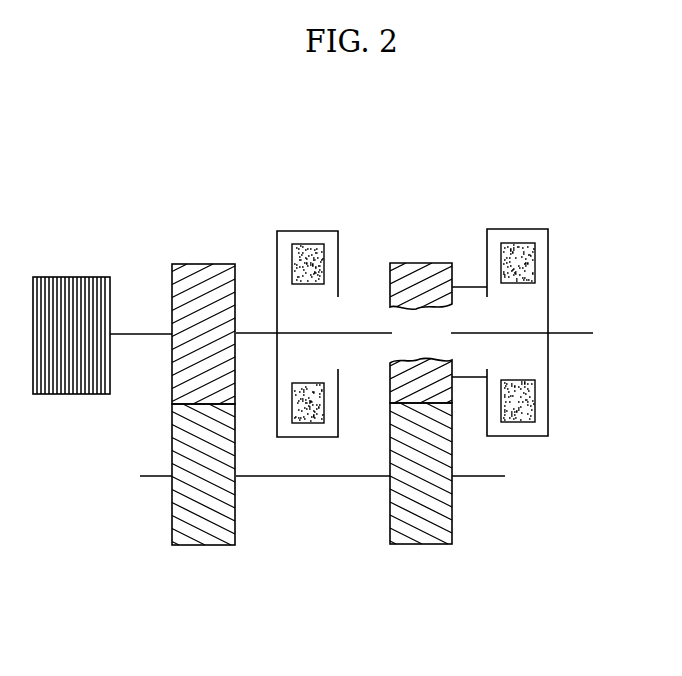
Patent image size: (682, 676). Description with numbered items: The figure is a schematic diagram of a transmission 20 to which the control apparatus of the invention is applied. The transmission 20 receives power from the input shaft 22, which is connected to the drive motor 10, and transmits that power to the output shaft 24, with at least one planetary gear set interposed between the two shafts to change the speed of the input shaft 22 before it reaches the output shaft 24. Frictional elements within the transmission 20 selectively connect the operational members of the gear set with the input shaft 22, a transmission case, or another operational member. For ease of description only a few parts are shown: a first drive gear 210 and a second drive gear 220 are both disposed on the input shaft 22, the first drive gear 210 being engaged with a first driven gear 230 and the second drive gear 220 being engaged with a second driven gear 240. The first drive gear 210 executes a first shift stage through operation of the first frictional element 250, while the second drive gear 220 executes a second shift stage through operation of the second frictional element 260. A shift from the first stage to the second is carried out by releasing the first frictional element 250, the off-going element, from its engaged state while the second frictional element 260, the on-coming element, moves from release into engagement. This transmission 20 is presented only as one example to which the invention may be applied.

The drive motor 10 is at (70, 277).
The transmission 20 is at (363, 245).
The input shaft 22 is at (142, 333).
The output shaft 24 is at (505, 478).
The first drive gear 210 is at (418, 262).
The second drive gear 220 is at (203, 264).
The first driven gear 230 is at (422, 545).
The second driven gear 240 is at (207, 545).
The first frictional element 250 is at (306, 231).
The second frictional element 260 is at (514, 229).